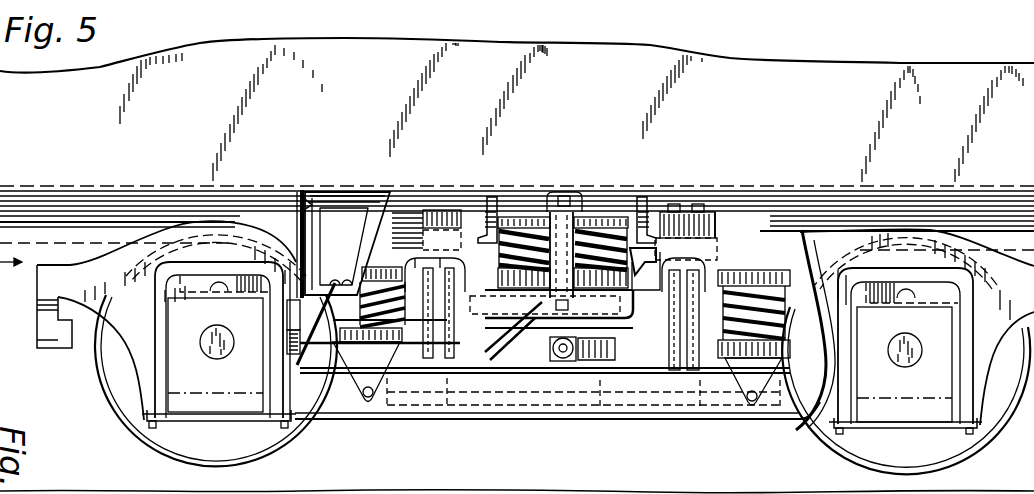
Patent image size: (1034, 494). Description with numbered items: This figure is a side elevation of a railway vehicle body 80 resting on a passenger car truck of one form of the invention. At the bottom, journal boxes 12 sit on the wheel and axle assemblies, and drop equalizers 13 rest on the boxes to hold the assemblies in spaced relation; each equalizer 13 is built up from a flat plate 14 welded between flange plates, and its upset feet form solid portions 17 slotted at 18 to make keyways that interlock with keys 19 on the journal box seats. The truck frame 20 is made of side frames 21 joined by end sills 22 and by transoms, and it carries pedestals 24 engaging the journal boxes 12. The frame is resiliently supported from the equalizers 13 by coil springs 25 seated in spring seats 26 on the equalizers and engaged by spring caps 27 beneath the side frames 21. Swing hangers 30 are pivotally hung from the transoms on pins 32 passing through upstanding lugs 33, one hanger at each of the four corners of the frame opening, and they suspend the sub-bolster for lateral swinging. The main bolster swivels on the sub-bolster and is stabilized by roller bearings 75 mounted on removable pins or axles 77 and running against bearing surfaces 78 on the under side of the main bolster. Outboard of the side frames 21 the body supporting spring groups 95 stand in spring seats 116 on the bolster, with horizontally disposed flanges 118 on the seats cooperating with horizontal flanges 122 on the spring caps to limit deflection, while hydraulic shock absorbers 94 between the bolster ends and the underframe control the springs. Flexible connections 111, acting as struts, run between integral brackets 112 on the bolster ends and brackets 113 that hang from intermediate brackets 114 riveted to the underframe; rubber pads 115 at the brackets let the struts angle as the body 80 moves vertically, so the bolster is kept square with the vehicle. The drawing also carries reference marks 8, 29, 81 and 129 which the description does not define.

The section line 8 is at (563, 188).
The journal boxes 12 is at (208, 395).
The equalizers 13 is at (365, 413).
The flat plate 14 is at (333, 401).
The solid portions 17 is at (213, 275).
The slot 18 is at (905, 303).
The keys 19 is at (907, 298).
The truck frame 20 is at (792, 228).
The side frames 21 is at (397, 228).
The end sills 22 is at (37, 308).
The pedestals 24 is at (812, 290).
The coil springs 25 is at (790, 300).
The spring seats 26 is at (376, 394).
The spring caps 27 is at (380, 258).
The tension member 29 is at (138, 367).
The swing hangers 30 is at (688, 225).
The pins 32 is at (716, 228).
The upstanding lugs 33 is at (697, 216).
The roller bearings 75 is at (550, 353).
The removable pins or axles 77 is at (743, 277).
The bearing surfaces 78 is at (620, 330).
The vehicle body 80 is at (787, 66).
The bottom line 81 is at (655, 490).
The hydraulic shock absorbers 94 is at (543, 224).
The body supporting spring groups 95 is at (615, 222).
The flexible connections 111 is at (335, 342).
The integral brackets 112 is at (490, 340).
The brackets 113 is at (300, 303).
The intermediate brackets 114 is at (300, 207).
The rubber pads 115 is at (302, 342).
The spring seats 116 is at (662, 268).
The horizontally disposed flanges 118 is at (655, 262).
The horizontal flanges 122 is at (484, 230).
The block 129 is at (472, 252).